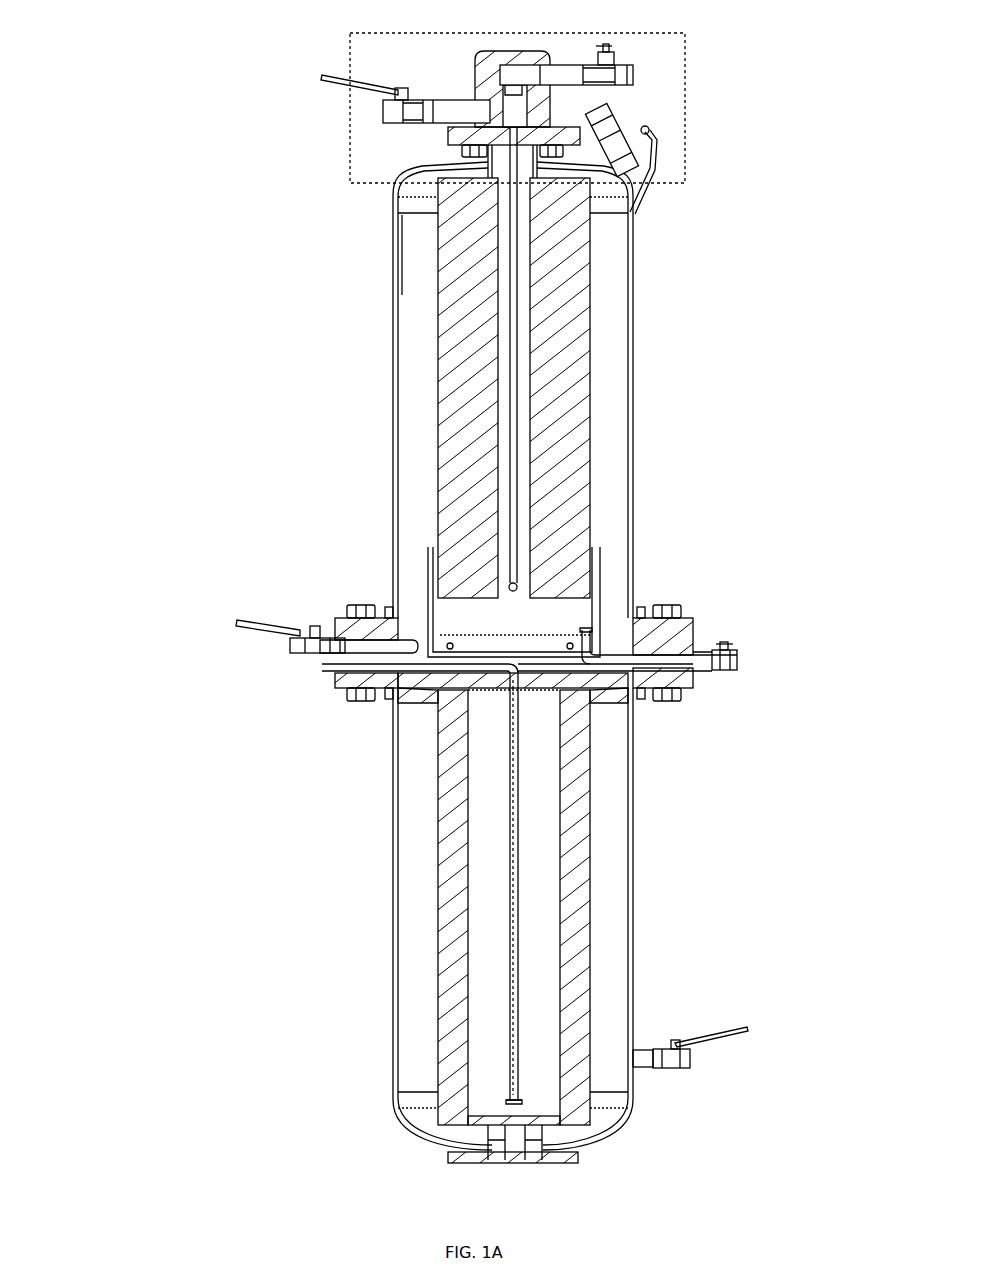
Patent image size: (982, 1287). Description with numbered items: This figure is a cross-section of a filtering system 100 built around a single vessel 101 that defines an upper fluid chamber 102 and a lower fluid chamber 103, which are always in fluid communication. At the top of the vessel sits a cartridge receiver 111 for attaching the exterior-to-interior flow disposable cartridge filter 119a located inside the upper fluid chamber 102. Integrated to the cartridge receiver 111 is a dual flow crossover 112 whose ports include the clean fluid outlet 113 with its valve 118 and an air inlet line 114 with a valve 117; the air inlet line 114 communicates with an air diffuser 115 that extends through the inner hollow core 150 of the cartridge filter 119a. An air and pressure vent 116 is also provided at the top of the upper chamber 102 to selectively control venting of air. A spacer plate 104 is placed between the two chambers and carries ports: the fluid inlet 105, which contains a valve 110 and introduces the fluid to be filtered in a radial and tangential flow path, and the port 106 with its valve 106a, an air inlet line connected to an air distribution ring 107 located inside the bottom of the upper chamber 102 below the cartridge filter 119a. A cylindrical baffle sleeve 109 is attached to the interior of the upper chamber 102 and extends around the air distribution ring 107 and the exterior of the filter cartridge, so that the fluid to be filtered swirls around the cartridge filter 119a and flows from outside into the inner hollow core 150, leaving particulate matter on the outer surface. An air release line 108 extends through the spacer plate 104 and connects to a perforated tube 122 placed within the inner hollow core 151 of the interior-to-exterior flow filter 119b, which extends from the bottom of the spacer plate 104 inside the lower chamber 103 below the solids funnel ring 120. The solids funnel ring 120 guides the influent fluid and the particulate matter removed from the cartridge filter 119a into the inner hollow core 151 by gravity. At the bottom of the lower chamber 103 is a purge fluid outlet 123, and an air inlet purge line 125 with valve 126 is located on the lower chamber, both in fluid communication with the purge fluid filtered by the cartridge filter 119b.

The filtering system 100 is at (534, 125).
The vessel 101 is at (633, 300).
The upper fluid chamber 102 is at (605, 370).
The lower fluid chamber 103 is at (612, 812).
The spacer plate 104 is at (665, 650).
The fluid inlet 105 is at (330, 660).
The air inlet line port 106 is at (672, 665).
The valve 106a is at (729, 660).
The air distribution ring 107 is at (585, 633).
The air release line 108 is at (355, 670).
The cylindrical baffle sleeve 109 is at (598, 577).
The valve 110 is at (300, 628).
The cartridge receiver 111 is at (452, 137).
The dual flow crossover 112 is at (518, 58).
The clean fluid outlet 113 is at (390, 106).
The air inlet line 114 is at (633, 75).
The air diffuser 115 is at (518, 585).
The air and pressure vent 116 is at (625, 130).
The valve 117 is at (608, 62).
The valve 118 is at (405, 88).
The exterior-to-interior flow disposable cartridge filter 119a is at (573, 262).
The interior-to-exterior flow filter 119b is at (575, 882).
The solids funnel ring 120 is at (610, 700).
The perforated tube 122 is at (513, 1078).
The purge fluid outlet 123 is at (570, 1160).
The air inlet purge line 125 is at (690, 1060).
The valve 126 is at (683, 1042).
The inner hollow core 150 is at (528, 455).
The inner hollow core 151 is at (548, 948).